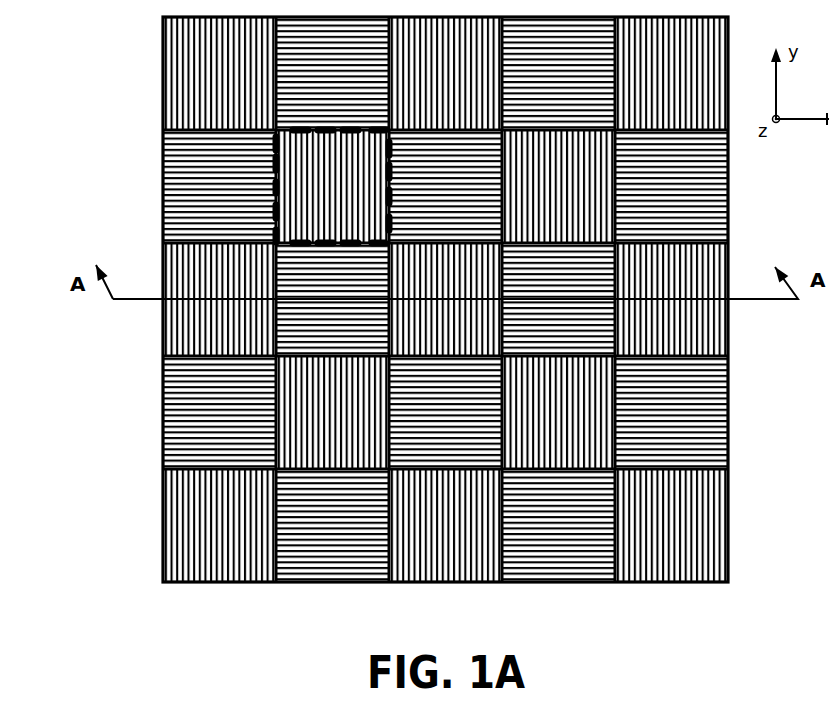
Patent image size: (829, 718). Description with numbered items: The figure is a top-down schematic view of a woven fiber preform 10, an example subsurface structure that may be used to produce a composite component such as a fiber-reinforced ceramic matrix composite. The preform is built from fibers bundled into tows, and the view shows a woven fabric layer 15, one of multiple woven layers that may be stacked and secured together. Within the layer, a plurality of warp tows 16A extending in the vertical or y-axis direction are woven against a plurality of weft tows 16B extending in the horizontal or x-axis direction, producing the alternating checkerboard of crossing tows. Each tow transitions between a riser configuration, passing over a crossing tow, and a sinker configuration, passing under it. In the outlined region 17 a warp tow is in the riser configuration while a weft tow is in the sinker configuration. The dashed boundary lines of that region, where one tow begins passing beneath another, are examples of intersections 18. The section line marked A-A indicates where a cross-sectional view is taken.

The woven fiber preform 10 is at (128, 86).
The woven fabric layer 15 is at (744, 526).
The warp tows 16A is at (275, 583).
The weft tows 16B is at (160, 360).
The outlined region 17 is at (276, 188).
The intersections 18 is at (200, 468).